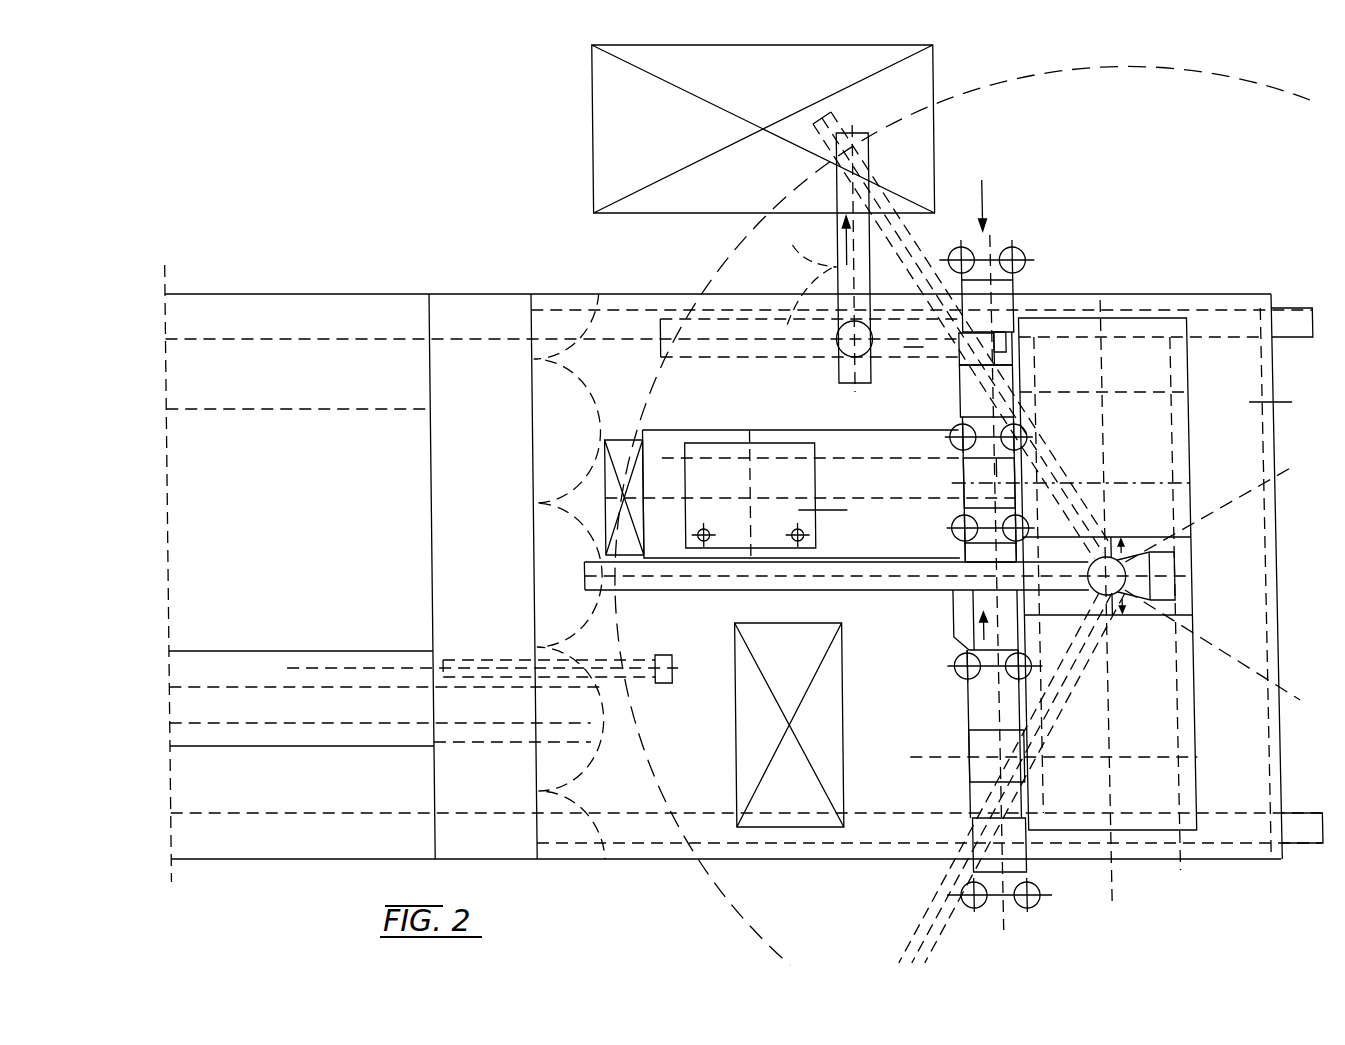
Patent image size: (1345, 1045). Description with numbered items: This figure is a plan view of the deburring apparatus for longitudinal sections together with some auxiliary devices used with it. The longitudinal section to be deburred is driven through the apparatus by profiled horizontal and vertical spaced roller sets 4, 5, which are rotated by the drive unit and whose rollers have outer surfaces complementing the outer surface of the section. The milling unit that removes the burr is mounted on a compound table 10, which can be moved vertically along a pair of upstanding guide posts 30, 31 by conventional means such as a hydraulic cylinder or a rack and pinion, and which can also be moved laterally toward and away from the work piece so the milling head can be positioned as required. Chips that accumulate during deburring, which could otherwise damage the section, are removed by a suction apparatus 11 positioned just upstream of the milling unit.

The horizontal roller set 4 is at (971, 476).
The vertical roller set 5 is at (956, 430).
The compound table 10 is at (715, 473).
The suction apparatus 11 is at (945, 548).
The upstanding guide post 30 is at (797, 542).
The upstanding guide post 31 is at (703, 542).